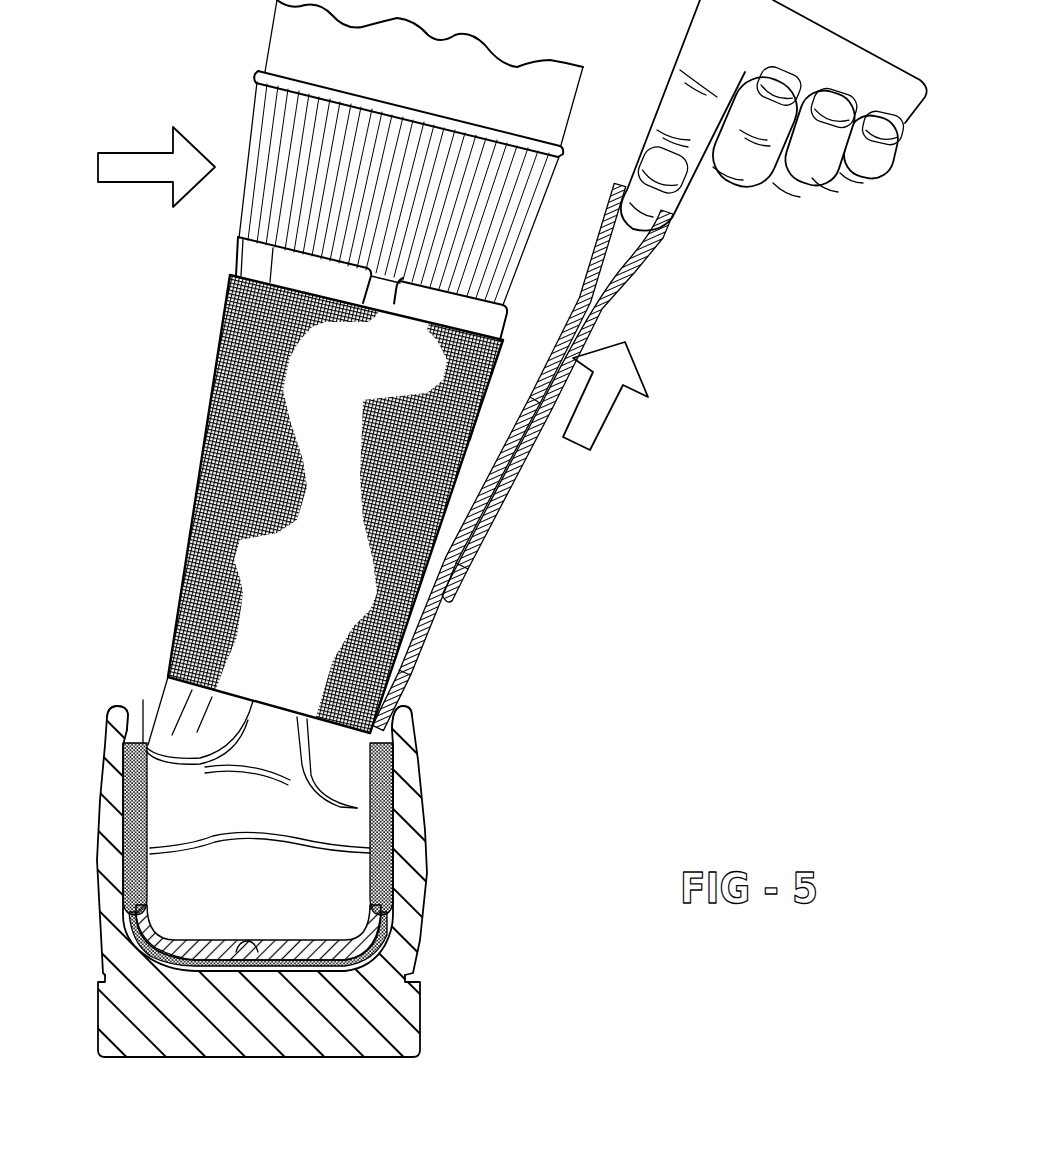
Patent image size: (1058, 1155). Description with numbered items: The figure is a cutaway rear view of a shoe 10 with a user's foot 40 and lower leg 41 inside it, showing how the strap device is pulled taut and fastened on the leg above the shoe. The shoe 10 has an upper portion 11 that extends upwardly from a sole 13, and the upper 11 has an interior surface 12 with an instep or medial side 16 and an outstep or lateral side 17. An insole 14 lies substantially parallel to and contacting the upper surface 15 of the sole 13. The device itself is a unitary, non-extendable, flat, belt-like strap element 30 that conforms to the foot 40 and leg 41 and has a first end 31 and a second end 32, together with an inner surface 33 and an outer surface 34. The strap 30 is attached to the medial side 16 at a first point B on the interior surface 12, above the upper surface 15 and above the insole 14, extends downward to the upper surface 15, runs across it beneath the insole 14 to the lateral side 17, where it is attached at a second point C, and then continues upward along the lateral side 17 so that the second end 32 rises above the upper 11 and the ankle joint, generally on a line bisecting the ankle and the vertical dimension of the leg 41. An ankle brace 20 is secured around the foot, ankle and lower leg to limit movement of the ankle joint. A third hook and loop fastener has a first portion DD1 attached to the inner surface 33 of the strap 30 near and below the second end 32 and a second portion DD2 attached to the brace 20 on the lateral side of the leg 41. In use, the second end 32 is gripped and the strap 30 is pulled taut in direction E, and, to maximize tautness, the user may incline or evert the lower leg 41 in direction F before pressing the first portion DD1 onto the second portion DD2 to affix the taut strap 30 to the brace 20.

The shoe 10 is at (233, 817).
The upper portion 11 is at (413, 702).
The interior surface 12 is at (125, 902).
The sole 13 is at (400, 1033).
The insole 14 is at (370, 950).
The upper surface 15 is at (233, 960).
The medial side 16 is at (127, 710).
The lateral side 17 is at (402, 672).
The ankle brace 20 is at (226, 260).
The strap element 30 is at (493, 525).
The first end 31 is at (143, 700).
The second end 32 is at (688, 192).
The inner surface 33 is at (450, 604).
The outer surface 34 is at (470, 560).
The foot 40 is at (413, 800).
The leg 41 is at (268, 45).
The first point B is at (118, 858).
The second point C is at (400, 857).
The first portion of hook and loop fastener DD1 is at (537, 398).
The second portion of hook and loop fastener DD2 is at (473, 423).
The pulling direction E is at (605, 396).
The leg inclination direction F is at (156, 167).